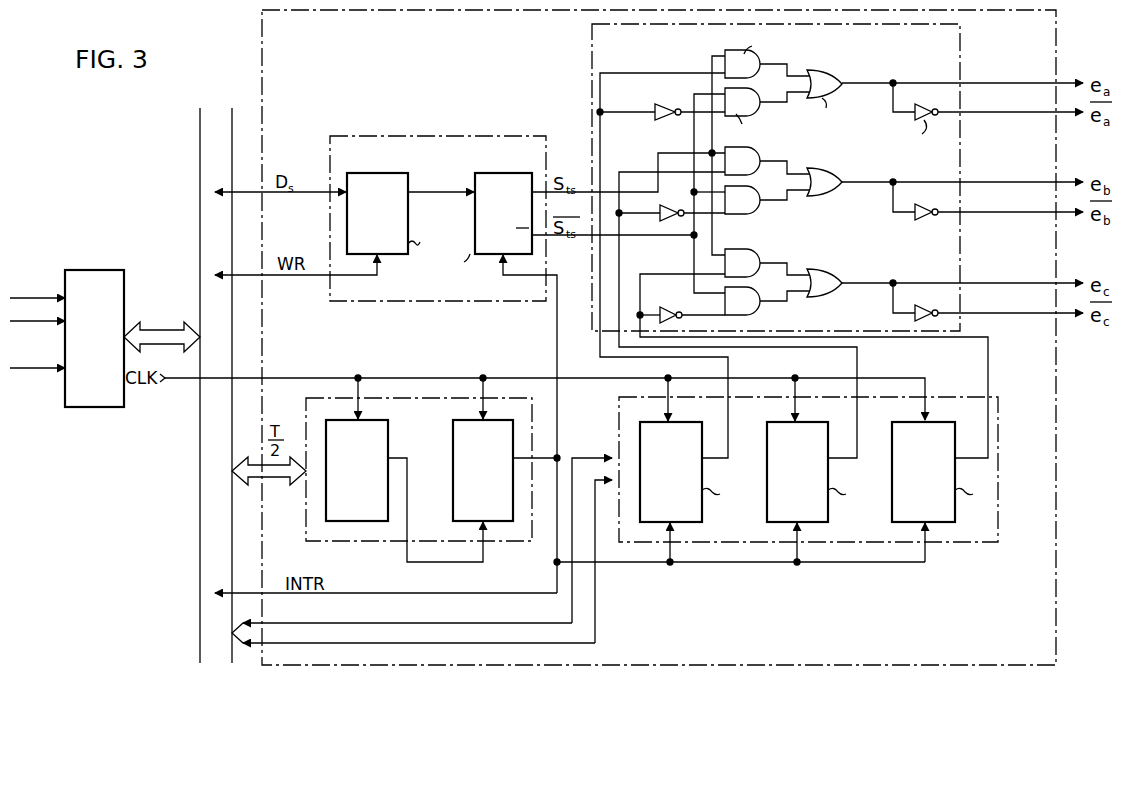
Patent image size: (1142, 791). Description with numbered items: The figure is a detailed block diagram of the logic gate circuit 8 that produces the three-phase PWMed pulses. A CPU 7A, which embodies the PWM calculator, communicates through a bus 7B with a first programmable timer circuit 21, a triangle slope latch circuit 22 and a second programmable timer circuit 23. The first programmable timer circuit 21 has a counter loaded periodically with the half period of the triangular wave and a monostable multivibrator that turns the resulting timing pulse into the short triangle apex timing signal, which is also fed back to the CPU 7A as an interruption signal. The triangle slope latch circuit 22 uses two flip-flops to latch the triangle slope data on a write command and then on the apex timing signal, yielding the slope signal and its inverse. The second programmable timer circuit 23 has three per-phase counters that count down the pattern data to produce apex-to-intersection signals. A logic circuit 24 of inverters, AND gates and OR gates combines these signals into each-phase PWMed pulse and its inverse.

The CPU 7A is at (90, 270).
The bus 7B is at (202, 548).
The logic gate circuit 8 is at (1056, 48).
The first programmable timer circuit 21 is at (365, 541).
The triangle slope latch circuit 22 is at (400, 136).
The second programmable timer circuit 23 is at (655, 542).
The logic circuit 24 is at (950, 50).